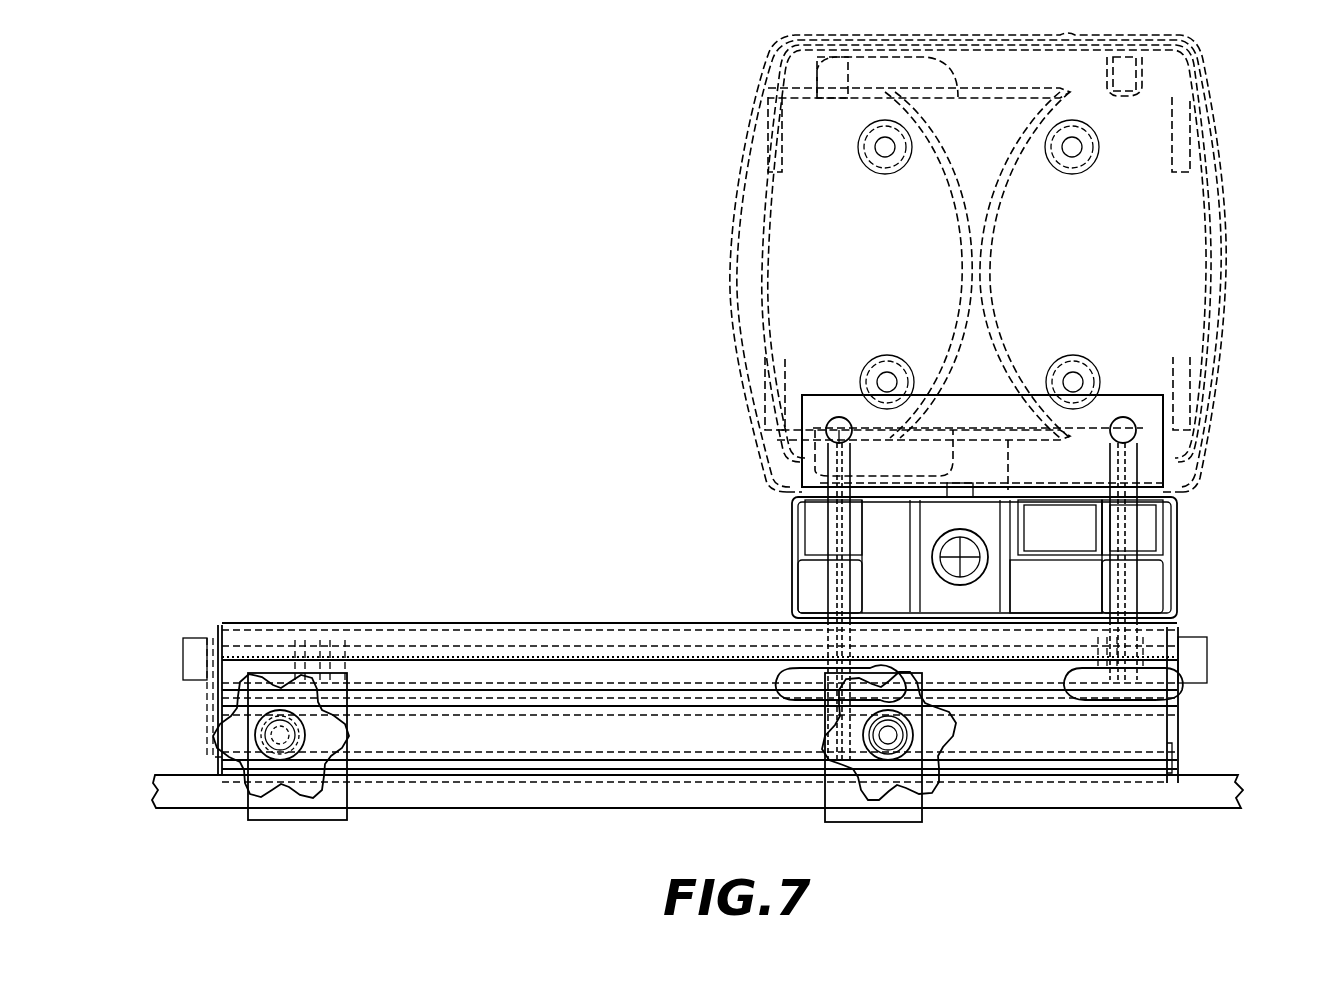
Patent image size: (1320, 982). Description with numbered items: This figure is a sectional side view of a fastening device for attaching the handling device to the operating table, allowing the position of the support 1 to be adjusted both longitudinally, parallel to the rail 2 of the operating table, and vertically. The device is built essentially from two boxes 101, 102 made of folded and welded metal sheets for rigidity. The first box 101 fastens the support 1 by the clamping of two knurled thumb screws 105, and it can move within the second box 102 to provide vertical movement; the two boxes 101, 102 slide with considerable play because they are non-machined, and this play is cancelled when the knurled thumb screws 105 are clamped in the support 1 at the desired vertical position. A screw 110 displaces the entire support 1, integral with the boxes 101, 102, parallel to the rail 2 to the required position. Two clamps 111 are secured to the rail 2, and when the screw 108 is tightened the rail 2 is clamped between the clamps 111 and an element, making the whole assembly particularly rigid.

The support 1 is at (1222, 278).
The rail 2 is at (1230, 793).
The first box 101 is at (807, 532).
The second box 102 is at (802, 573).
The knurled thumb screw 105 is at (783, 693).
The screw 108 is at (937, 745).
The screw 110 is at (734, 640).
The clamp 111 is at (837, 798).